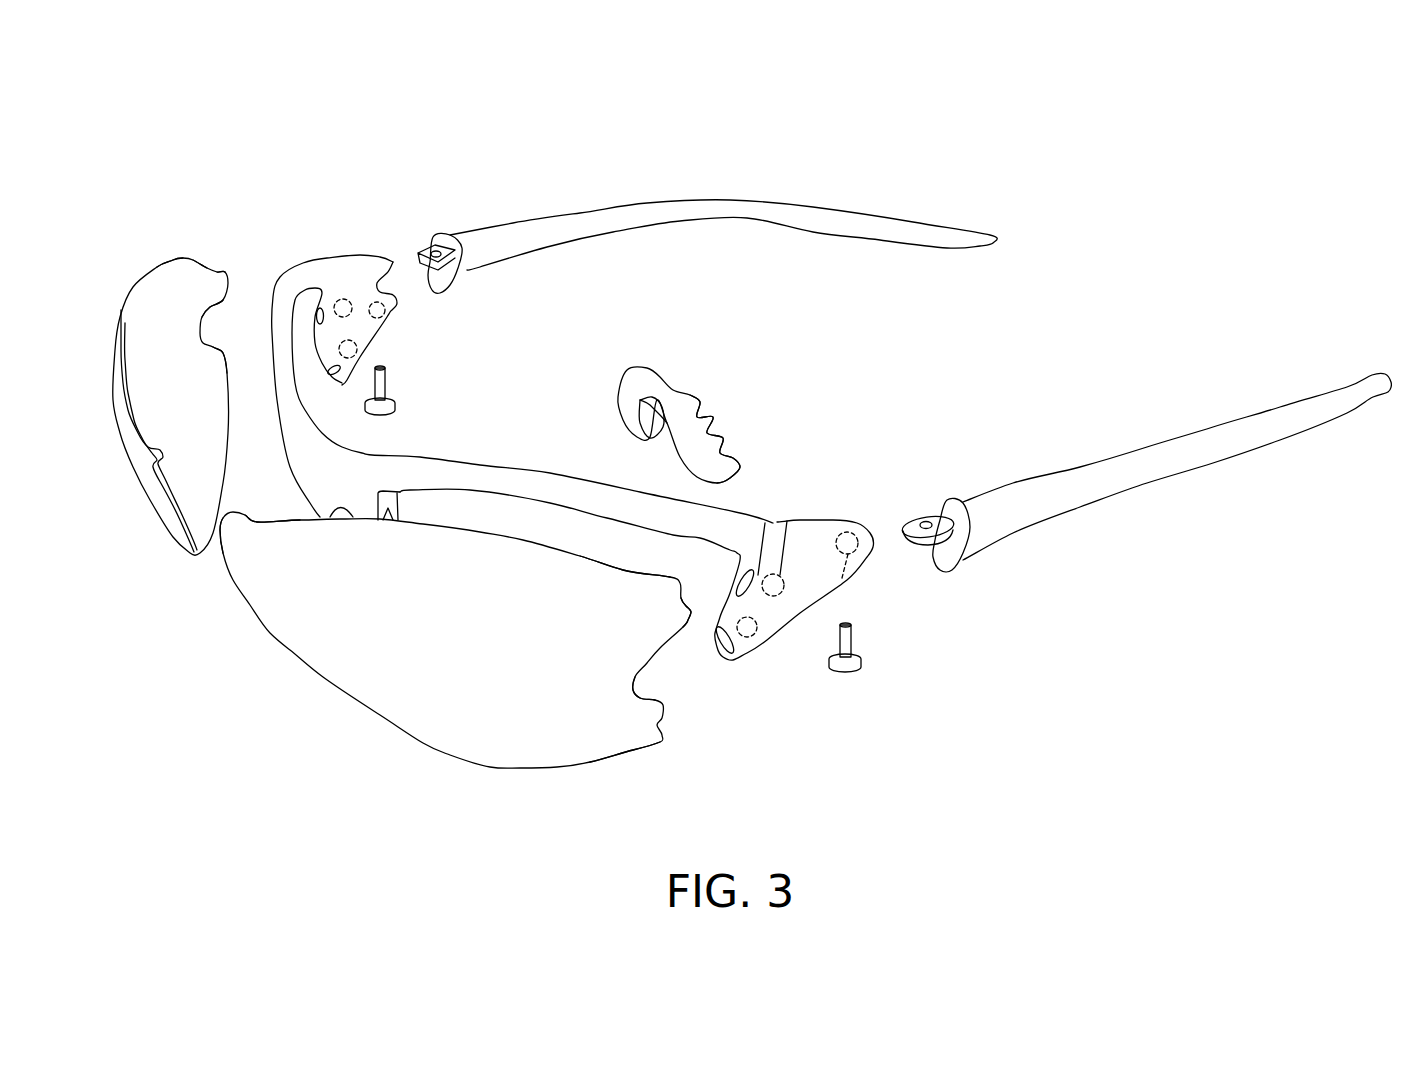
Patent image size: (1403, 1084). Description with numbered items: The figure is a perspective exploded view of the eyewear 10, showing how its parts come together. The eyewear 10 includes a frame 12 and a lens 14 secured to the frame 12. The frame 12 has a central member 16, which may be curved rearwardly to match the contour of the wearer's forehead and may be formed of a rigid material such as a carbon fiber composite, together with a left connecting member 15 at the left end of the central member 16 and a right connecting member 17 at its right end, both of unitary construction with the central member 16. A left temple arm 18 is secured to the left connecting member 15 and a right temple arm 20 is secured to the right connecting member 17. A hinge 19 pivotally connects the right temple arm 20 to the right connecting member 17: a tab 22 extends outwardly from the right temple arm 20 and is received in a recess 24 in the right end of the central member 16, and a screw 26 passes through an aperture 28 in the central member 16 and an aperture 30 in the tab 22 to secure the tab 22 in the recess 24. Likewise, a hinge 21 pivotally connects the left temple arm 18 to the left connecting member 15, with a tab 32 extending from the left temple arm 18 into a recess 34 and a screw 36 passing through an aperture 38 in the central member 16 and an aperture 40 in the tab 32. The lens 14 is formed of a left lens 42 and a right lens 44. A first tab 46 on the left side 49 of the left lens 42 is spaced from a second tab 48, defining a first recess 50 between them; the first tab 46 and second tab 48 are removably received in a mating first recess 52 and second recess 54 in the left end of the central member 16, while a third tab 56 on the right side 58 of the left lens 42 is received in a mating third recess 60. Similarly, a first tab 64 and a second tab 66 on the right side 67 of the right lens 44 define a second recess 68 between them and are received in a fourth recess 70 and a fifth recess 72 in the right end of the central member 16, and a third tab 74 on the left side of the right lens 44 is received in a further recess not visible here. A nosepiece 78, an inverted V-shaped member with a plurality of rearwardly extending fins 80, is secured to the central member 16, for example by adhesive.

The eyewear 10 is at (995, 329).
The frame 12 is at (586, 446).
The lens 14 is at (443, 636).
The left connecting member 15 is at (650, 586).
The central member 16 is at (527, 470).
The right connecting member 17 is at (368, 308).
The left temple arm 18 is at (1195, 452).
The hinge 19 is at (678, 269).
The right temple arm 20 is at (747, 200).
The hinge 21 is at (1110, 548).
The tab 22 is at (418, 252).
The recess 24 is at (390, 283).
The screw 26 is at (398, 396).
The aperture 28 is at (378, 313).
The aperture 30 is at (437, 238).
The tab 32 is at (945, 525).
The recess 34 is at (862, 540).
The screw 36 is at (855, 668).
The aperture 38 is at (855, 565).
The aperture 40 is at (929, 521).
The left lens 42 is at (413, 657).
The right lens 44 is at (164, 386).
The first tab 46 is at (675, 615).
The second tab 48 is at (638, 740).
The left side 49 is at (633, 577).
The first recess 50 is at (643, 683).
The first recess 52 is at (780, 575).
The second recess 54 is at (743, 650).
The third tab 56 is at (230, 557).
The right side 58 is at (265, 532).
The third recess 60 is at (386, 522).
The first tab 64 is at (214, 283).
The second tab 66 is at (212, 362).
The right side 67 is at (184, 270).
The second recess 68 is at (213, 328).
The fourth recess 70 is at (340, 297).
The fifth recess 72 is at (345, 383).
The third tab 74 is at (147, 450).
The nosepiece 78 is at (691, 411).
The fins 80 is at (716, 410).